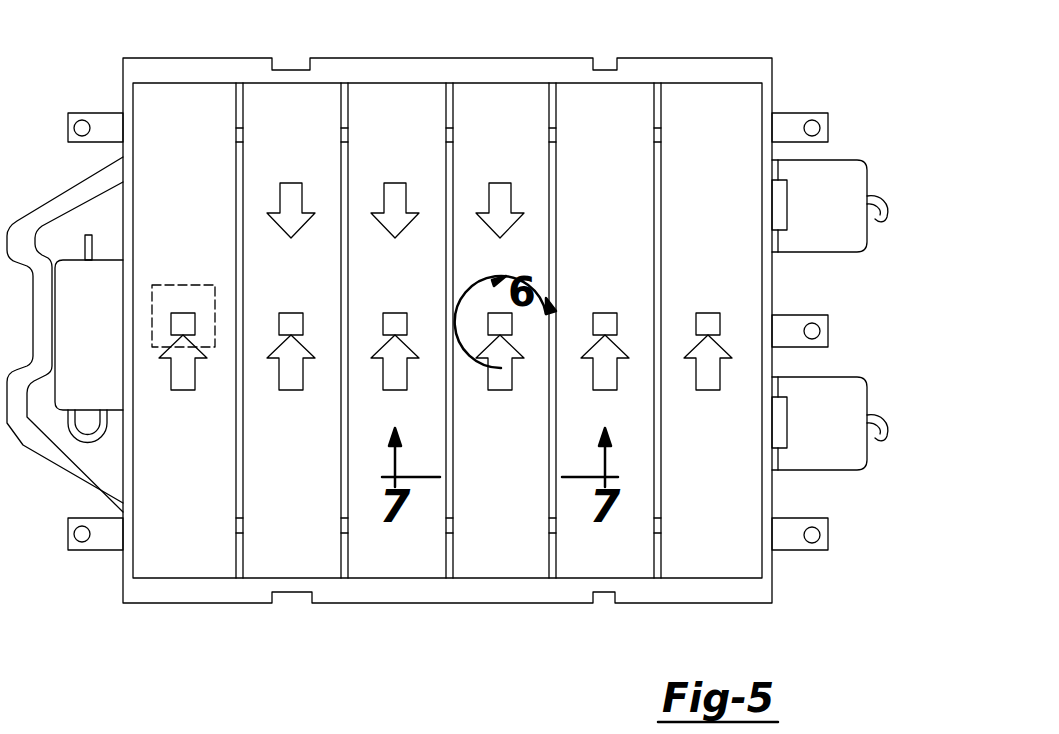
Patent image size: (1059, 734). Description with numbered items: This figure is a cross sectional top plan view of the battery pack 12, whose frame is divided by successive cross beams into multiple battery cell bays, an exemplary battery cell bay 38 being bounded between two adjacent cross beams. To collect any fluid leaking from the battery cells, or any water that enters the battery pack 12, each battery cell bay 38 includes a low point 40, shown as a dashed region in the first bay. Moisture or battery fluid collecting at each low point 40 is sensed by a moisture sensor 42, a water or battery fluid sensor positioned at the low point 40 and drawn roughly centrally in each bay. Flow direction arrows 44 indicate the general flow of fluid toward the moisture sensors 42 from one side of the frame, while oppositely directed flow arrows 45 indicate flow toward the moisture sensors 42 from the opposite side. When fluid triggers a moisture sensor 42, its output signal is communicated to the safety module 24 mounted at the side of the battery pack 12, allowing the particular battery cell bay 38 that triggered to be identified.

The battery pack 12 is at (810, 57).
The safety module 24 is at (840, 397).
The battery cell bay 38 is at (280, 117).
The low point 40 is at (158, 282).
The moisture sensor 42 is at (183, 313).
The flow direction arrows 44 is at (183, 390).
The oppositely directed flow arrows 45 is at (301, 199).